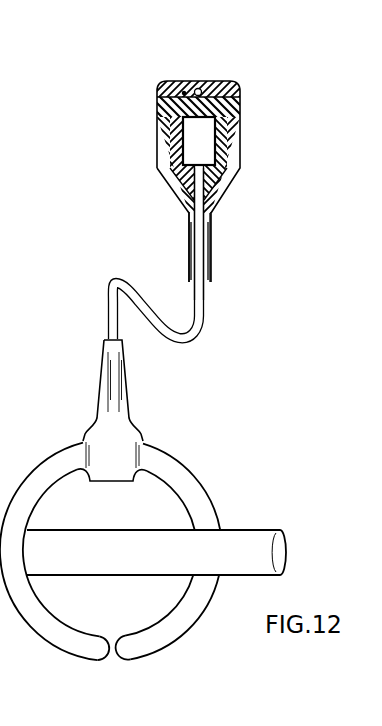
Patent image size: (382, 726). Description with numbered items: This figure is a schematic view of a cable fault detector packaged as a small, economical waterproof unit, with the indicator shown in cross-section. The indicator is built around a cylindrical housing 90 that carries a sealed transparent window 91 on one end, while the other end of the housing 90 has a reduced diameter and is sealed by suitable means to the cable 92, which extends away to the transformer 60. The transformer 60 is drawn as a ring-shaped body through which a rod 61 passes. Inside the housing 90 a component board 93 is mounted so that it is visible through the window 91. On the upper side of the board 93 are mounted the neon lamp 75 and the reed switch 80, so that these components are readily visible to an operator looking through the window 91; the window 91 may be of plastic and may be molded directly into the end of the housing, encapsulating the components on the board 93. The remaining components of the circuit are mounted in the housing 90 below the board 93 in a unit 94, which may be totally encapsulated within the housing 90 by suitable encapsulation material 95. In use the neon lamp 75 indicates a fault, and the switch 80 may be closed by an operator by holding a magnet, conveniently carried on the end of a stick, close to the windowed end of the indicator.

The transformer 60 is at (181, 460).
The rod 61 is at (284, 553).
The neon lamp 75 is at (198, 88).
The reed switch 80 is at (184, 92).
The cylindrical housing 90 is at (208, 170).
The sealed transparent window 91 is at (217, 81).
The cable 92 is at (108, 316).
The component board 93 is at (228, 101).
The unit 94 is at (185, 166).
The encapsulation material 95 is at (219, 184).